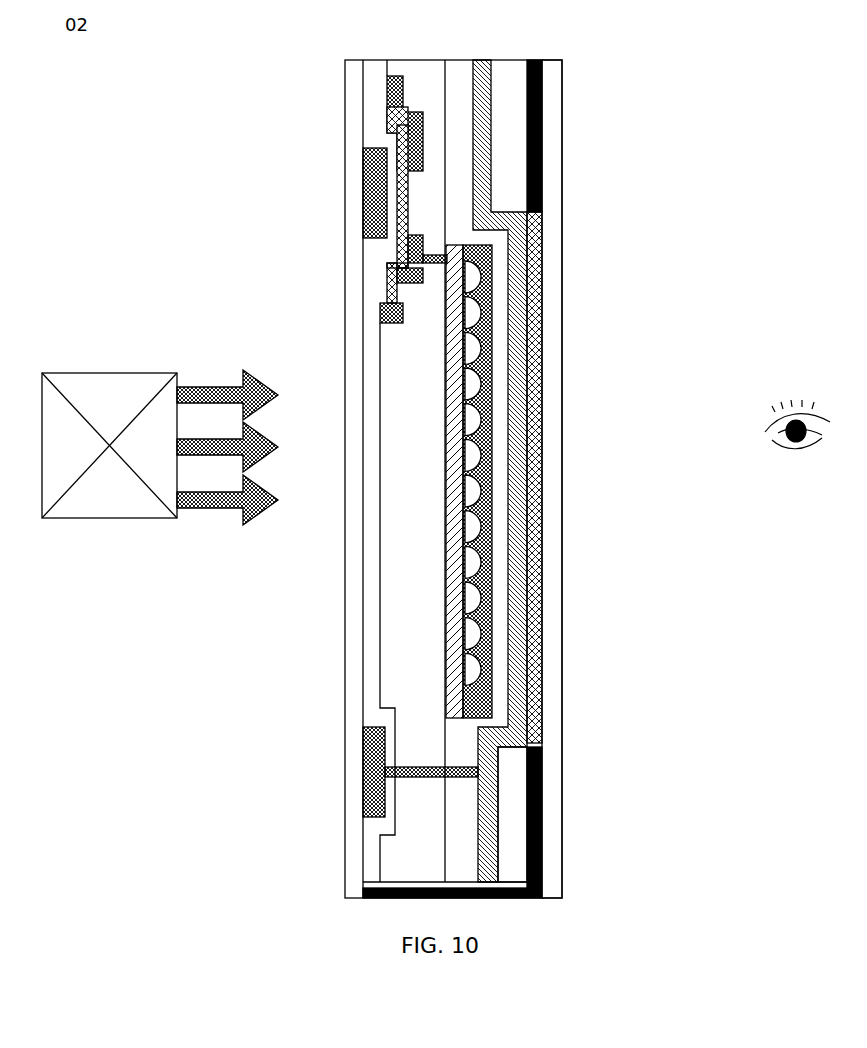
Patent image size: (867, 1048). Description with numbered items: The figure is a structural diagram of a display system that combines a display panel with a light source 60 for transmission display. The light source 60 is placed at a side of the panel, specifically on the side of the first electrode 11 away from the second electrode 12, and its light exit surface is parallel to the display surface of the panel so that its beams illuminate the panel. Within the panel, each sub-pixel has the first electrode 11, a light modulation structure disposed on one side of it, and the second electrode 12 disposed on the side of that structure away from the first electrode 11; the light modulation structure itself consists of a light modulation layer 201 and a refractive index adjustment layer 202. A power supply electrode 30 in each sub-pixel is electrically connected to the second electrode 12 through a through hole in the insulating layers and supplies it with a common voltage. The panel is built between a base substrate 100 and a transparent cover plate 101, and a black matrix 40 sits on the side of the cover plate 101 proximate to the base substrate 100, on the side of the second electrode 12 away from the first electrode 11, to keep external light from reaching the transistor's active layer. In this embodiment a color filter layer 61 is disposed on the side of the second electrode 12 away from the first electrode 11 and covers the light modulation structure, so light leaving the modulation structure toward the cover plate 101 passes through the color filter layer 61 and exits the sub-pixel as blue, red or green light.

The base substrate 100 is at (348, 80).
The cover plate 101 is at (553, 72).
The first electrode 11 is at (447, 350).
The light modulation layer 201 is at (470, 417).
The refractive index adjustment layer 202 is at (490, 520).
The second electrode 12 is at (527, 587).
The color filter layer 61 is at (530, 655).
The black matrix 40 is at (542, 803).
The power supply electrode 30 is at (370, 773).
The light source 60 is at (102, 495).